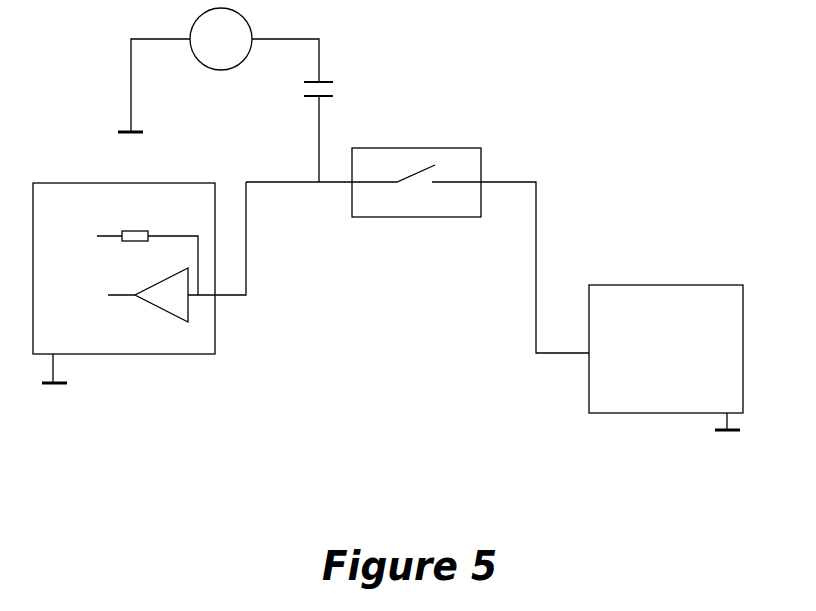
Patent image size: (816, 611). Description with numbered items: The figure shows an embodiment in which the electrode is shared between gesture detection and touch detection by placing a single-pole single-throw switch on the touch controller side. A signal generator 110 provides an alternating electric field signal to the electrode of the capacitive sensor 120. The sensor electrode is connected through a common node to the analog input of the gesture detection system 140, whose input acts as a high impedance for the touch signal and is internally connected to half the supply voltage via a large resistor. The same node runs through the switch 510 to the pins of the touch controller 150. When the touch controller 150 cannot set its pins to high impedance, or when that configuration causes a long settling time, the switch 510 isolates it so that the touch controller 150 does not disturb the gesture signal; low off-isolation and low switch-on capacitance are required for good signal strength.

The signal generator 110 is at (221, 70).
The capacitive sensor 120 is at (335, 88).
The gesture detection system 140 is at (139, 294).
The touch controller 150 is at (666, 367).
The SPST switch 510 is at (450, 220).